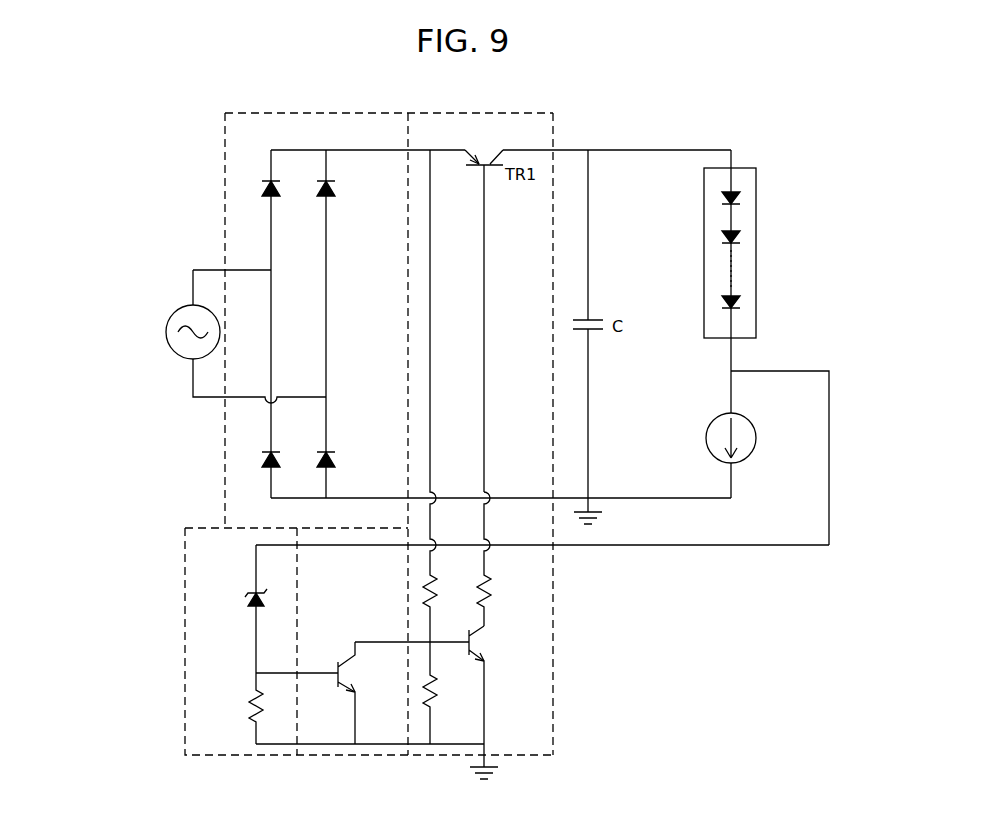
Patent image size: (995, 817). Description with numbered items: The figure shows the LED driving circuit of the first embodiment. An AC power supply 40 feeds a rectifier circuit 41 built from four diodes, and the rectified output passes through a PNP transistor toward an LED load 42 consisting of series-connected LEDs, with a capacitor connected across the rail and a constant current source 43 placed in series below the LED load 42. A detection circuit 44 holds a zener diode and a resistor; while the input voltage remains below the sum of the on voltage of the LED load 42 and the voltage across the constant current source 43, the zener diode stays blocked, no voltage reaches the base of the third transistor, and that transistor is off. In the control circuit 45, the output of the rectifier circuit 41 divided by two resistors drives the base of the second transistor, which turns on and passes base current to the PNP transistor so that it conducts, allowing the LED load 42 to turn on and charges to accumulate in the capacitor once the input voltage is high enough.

The AC power supply 40 is at (189, 336).
The rectifier circuit 41 is at (227, 138).
The LED load 42 is at (772, 281).
The constant current source 43 is at (711, 458).
The detection circuit 44 is at (185, 650).
The control circuit 45 is at (553, 646).